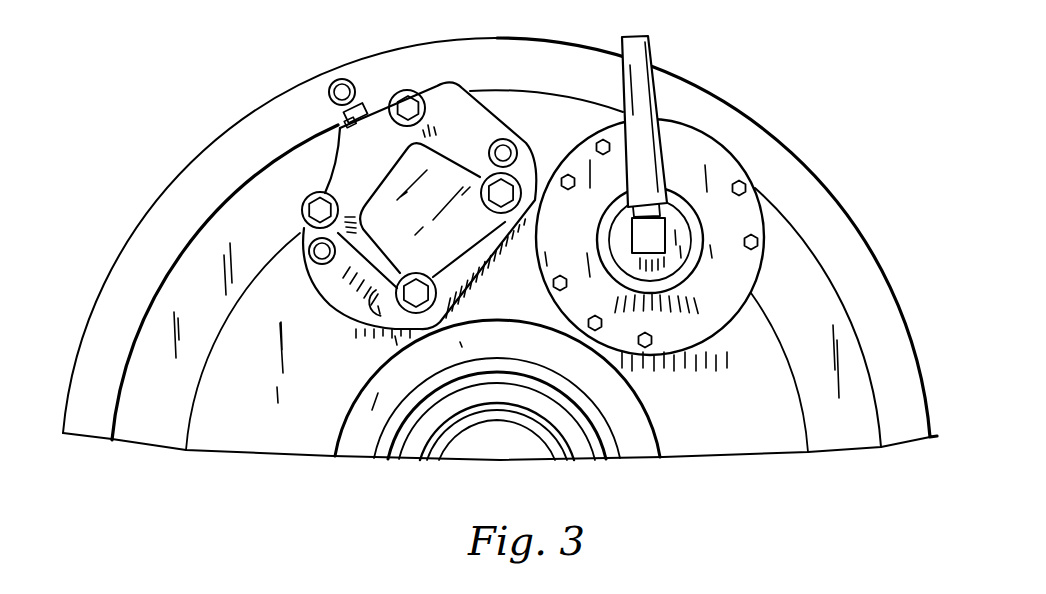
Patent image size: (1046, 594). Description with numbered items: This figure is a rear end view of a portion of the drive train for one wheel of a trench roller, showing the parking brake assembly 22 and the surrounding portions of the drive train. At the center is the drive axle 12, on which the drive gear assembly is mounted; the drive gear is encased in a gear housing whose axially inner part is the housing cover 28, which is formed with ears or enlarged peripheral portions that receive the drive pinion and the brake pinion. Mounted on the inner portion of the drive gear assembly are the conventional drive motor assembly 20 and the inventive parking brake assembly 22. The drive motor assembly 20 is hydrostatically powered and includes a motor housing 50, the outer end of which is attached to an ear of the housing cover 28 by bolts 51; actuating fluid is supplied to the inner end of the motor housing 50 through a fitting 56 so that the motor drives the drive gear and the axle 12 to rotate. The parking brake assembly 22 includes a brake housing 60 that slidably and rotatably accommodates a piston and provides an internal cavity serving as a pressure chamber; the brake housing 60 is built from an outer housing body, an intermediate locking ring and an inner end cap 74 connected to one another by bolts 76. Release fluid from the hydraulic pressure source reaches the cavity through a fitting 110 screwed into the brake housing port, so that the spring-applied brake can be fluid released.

The drive axle 12 is at (480, 442).
The drive motor assembly 20 is at (382, 178).
The parking brake assembly 22 is at (678, 217).
The housing cover 28 is at (98, 413).
The motor housing 50 is at (325, 181).
The bolts 51 is at (357, 327).
The fitting 56 is at (343, 78).
The brake housing 60 is at (742, 210).
The inner end cap 74 is at (740, 313).
The bolts 76 is at (762, 242).
The fitting 110 is at (647, 228).